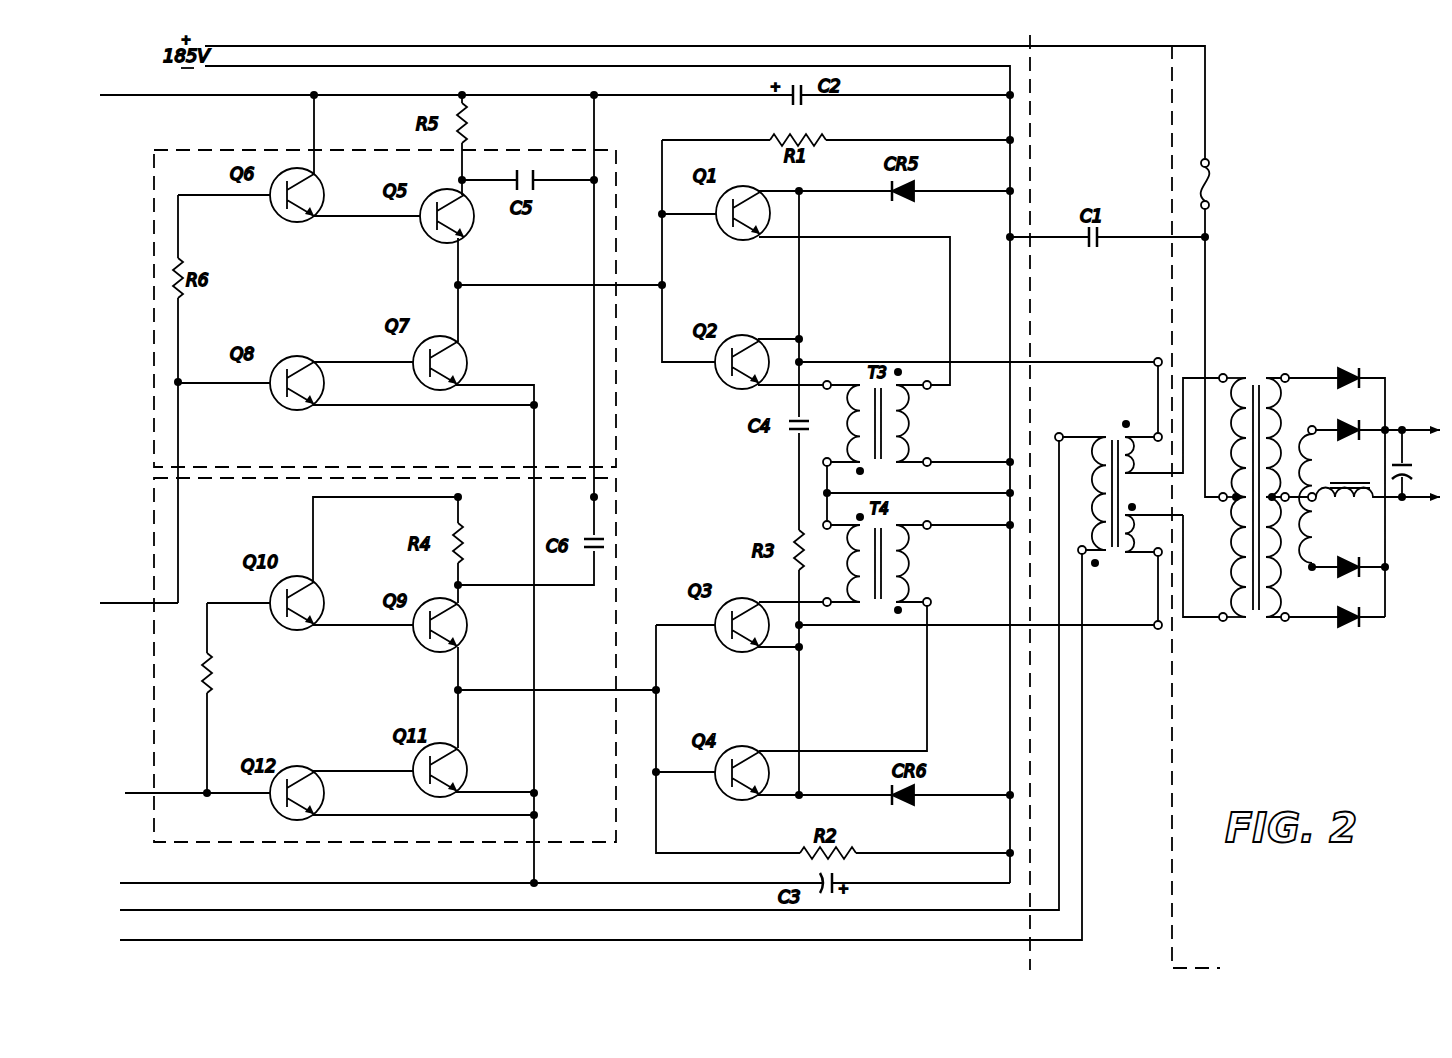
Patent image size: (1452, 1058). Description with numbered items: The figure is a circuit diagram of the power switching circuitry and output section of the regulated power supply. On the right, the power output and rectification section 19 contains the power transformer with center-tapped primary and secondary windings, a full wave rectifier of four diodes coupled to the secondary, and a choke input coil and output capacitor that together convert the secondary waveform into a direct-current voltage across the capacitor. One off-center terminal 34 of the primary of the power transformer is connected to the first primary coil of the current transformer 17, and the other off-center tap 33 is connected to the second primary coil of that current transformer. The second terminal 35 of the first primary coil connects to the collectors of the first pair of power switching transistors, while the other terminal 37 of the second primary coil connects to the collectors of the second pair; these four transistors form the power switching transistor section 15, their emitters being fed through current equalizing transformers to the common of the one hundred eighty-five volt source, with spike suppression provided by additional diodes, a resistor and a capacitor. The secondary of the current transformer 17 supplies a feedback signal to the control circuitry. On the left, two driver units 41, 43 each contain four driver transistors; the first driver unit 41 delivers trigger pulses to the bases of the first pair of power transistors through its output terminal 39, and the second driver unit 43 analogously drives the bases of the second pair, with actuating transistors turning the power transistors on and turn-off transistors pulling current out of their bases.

The power switching transistor section 15 is at (768, 975).
The current transformer 17 is at (1137, 511).
The power output and rectification section 19 is at (1314, 637).
The off-center tap of the primary of transformer T1 33 is at (1222, 622).
The off-center terminal of the primary of transformer T1 34 is at (1223, 376).
The second terminal of the first primary coil Lp1 35 is at (1158, 361).
The terminal of the second primary coil Lp2 37 is at (1156, 630).
The output terminal of driver section 39 is at (641, 288).
The driver unit 41 is at (154, 150).
The driver unit 43 is at (154, 490).